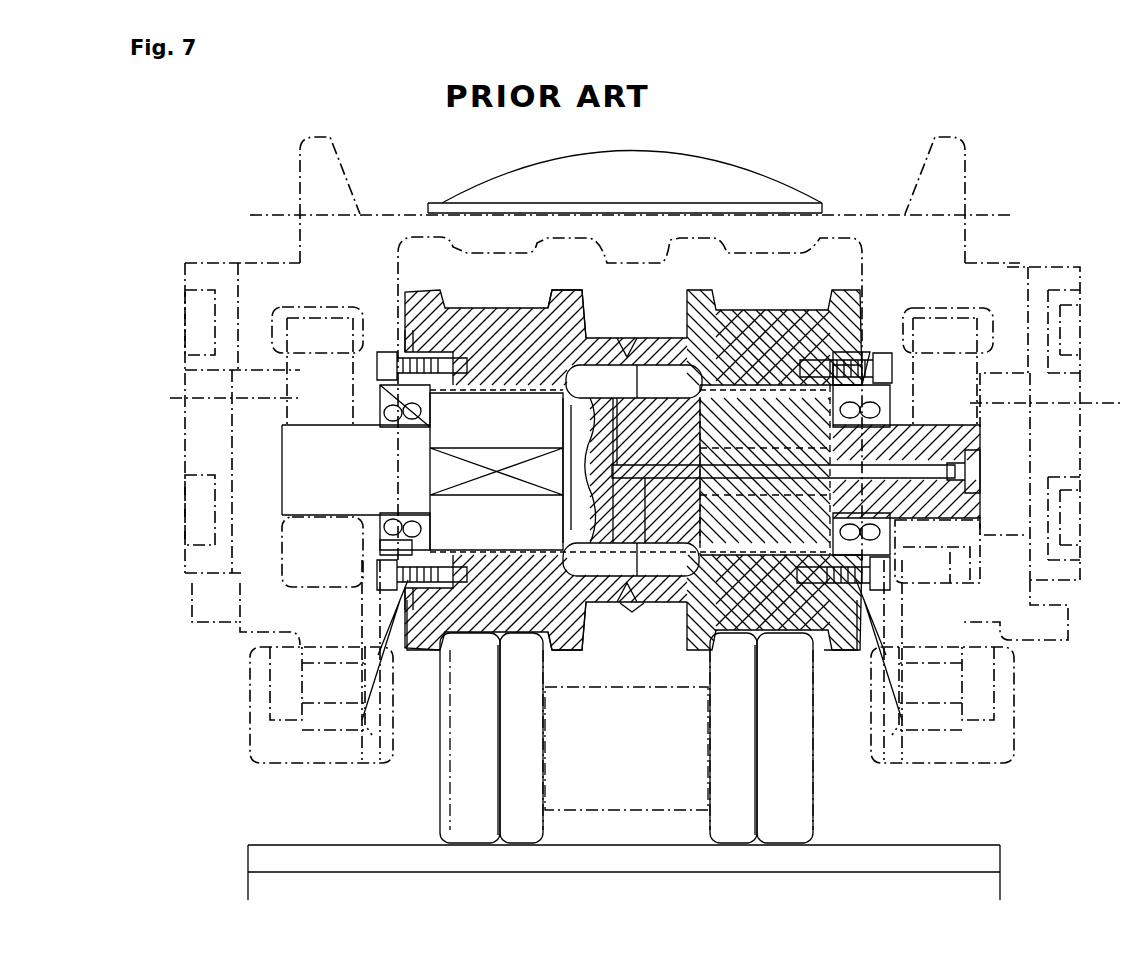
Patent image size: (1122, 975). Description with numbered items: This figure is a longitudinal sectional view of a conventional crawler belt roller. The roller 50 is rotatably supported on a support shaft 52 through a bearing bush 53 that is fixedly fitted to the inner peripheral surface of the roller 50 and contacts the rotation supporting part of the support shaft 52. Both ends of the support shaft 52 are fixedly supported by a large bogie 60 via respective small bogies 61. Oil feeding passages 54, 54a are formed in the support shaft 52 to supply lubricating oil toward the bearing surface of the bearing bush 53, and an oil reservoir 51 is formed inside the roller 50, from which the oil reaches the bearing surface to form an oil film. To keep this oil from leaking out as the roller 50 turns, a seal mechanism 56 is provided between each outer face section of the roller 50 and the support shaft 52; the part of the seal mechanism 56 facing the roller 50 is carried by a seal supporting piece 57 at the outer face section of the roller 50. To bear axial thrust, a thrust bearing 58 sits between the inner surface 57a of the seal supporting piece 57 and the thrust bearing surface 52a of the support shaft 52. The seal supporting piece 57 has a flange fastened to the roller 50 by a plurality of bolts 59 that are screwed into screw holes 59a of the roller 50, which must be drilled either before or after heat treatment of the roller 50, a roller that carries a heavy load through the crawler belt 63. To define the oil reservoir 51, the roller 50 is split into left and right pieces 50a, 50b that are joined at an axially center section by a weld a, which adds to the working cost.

The roller 50 is at (728, 300).
The left piece 50a is at (478, 322).
The right piece 50b is at (740, 338).
The oil reservoir 51 is at (667, 378).
The support shaft 52 is at (755, 415).
The thrust bearing surface 52a is at (845, 345).
The inner surface 57a is at (861, 470).
The bearing bush 53 is at (540, 372).
The oil feeding passage 54 is at (930, 470).
The oil feeding passage 54a is at (590, 388).
The seal mechanism 56 is at (375, 530).
The seal supporting piece 57 is at (378, 556).
The thrust bearing 58 is at (806, 576).
The bolts 59 is at (390, 588).
The screw holes 59a is at (450, 630).
The large bogie 60 is at (1000, 267).
The small bogies 61 is at (300, 397).
The crawler belt 63 is at (953, 845).
The weld a is at (620, 607).